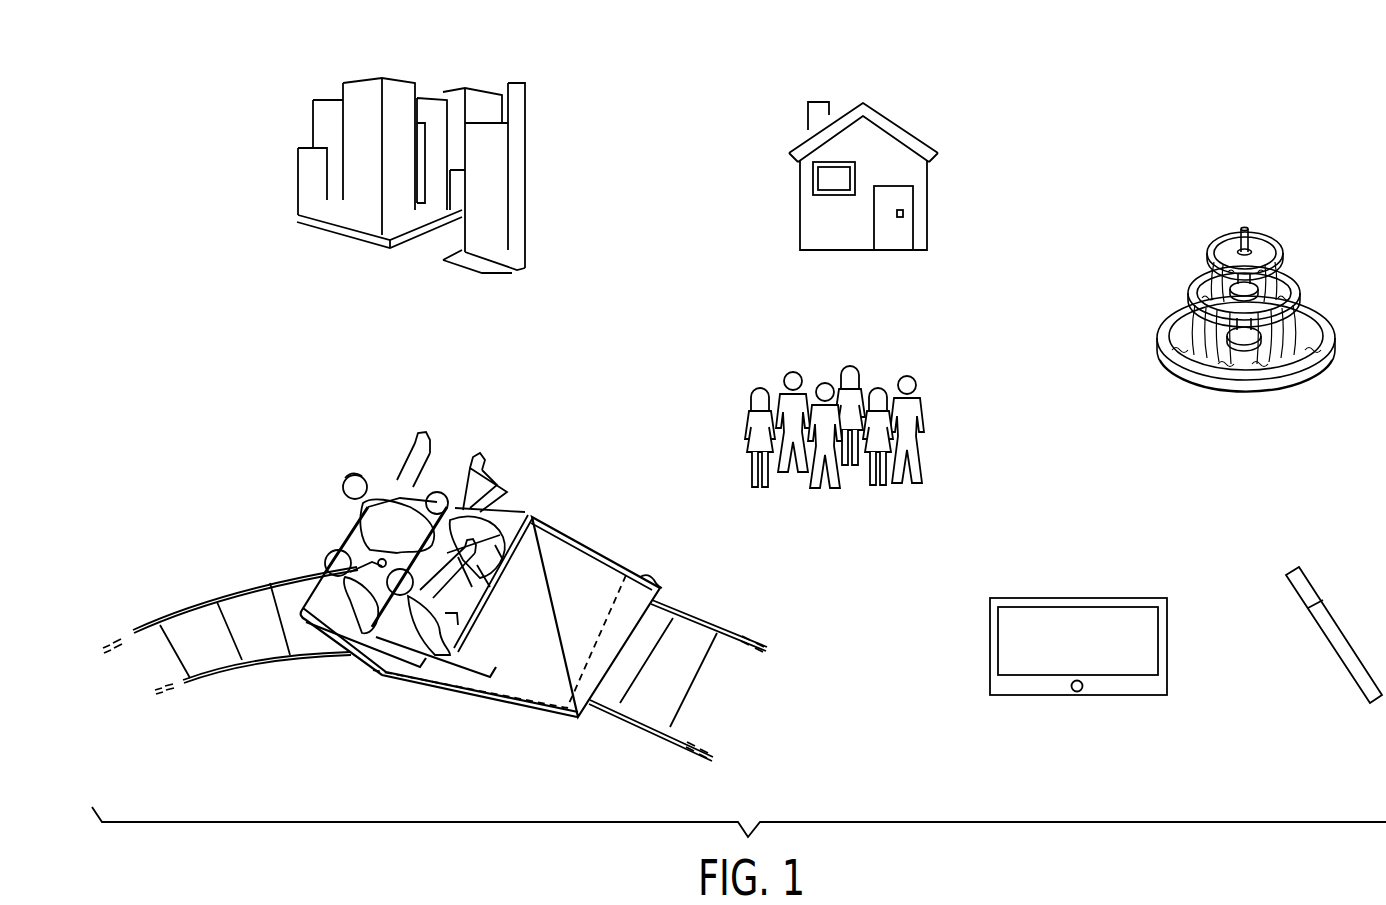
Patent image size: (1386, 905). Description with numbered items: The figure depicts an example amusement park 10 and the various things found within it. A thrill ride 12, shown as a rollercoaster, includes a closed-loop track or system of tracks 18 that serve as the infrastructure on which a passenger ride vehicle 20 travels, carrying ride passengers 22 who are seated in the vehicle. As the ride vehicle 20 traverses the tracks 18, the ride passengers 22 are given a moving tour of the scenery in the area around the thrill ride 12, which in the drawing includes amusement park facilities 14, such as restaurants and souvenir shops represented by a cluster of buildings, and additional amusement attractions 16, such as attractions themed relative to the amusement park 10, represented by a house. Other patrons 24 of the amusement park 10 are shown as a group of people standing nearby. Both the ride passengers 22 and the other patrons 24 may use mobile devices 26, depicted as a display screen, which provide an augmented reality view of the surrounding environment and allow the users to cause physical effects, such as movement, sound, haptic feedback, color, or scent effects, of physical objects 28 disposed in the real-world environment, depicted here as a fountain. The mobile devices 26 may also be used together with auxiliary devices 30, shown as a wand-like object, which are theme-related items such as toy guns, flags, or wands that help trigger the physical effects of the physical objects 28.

The amusement park 10 is at (1222, 120).
The thrill ride 12 is at (239, 488).
The amusement park facilities 14 is at (363, 92).
The additional amusement attractions 16 is at (771, 98).
The tracks 18 is at (643, 727).
The passenger ride vehicle 20 is at (600, 570).
The ride passengers 22 is at (347, 473).
The other patrons 24 is at (719, 389).
The mobile devices 26 is at (962, 601).
The physical objects 28 is at (1156, 251).
The auxiliary devices 30 is at (1272, 553).